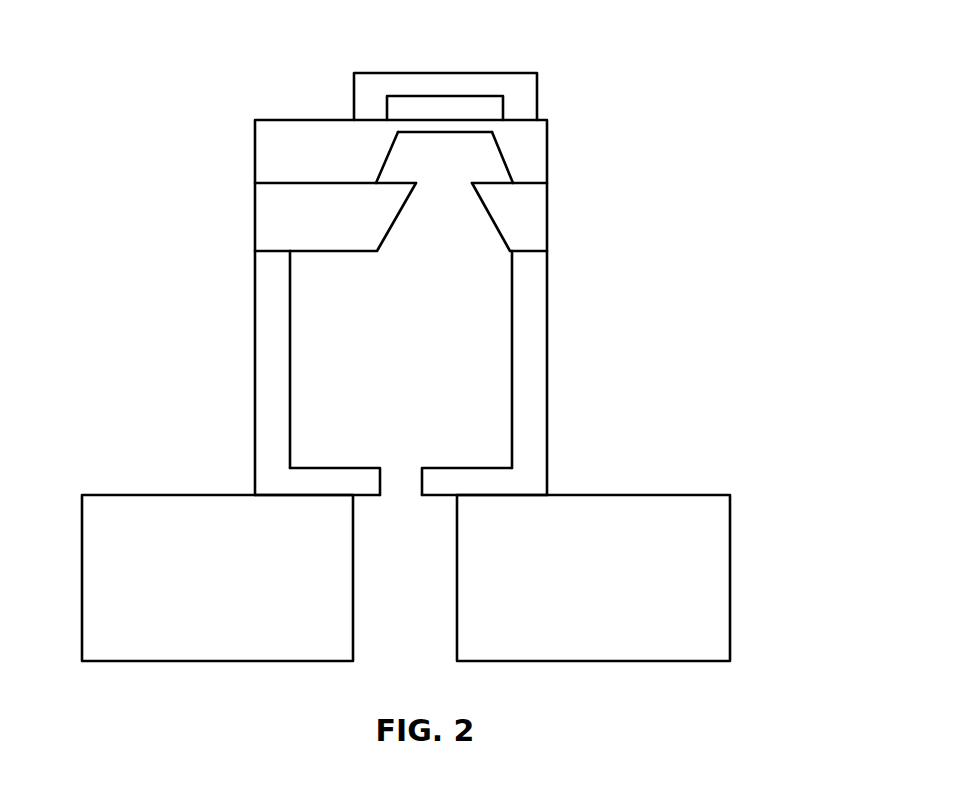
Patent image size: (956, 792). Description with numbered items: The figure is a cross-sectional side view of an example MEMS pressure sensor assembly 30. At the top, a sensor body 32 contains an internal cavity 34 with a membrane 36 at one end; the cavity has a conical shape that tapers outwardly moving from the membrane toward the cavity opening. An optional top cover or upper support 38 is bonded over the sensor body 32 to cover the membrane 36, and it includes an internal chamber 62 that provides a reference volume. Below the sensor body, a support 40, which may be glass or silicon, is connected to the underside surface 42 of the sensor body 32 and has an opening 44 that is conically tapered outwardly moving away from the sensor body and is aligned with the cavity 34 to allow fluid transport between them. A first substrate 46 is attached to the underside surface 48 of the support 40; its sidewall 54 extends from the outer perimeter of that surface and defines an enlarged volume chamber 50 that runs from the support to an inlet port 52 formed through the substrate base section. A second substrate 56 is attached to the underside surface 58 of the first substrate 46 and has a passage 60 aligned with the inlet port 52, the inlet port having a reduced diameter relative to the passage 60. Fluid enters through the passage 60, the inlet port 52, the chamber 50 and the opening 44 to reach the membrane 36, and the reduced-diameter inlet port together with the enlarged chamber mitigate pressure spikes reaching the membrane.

The pressure sensor assembly 30 is at (608, 93).
The sensor body 32 is at (255, 153).
The internal cavity 34 is at (482, 167).
The membrane 36 is at (426, 131).
The upper support 38 is at (520, 87).
The internal chamber 62 is at (417, 108).
The support 40 is at (266, 210).
The underside surface 42 is at (290, 184).
The opening 44 is at (470, 230).
The first substrate 46 is at (246, 312).
The underside surface 48 is at (274, 254).
The enlarged volume chamber 50 is at (473, 330).
The inlet port 52 is at (400, 479).
The sidewall 54 is at (255, 362).
The second substrate 56 is at (742, 532).
The underside surface 58 is at (510, 496).
The passage 60 is at (382, 613).